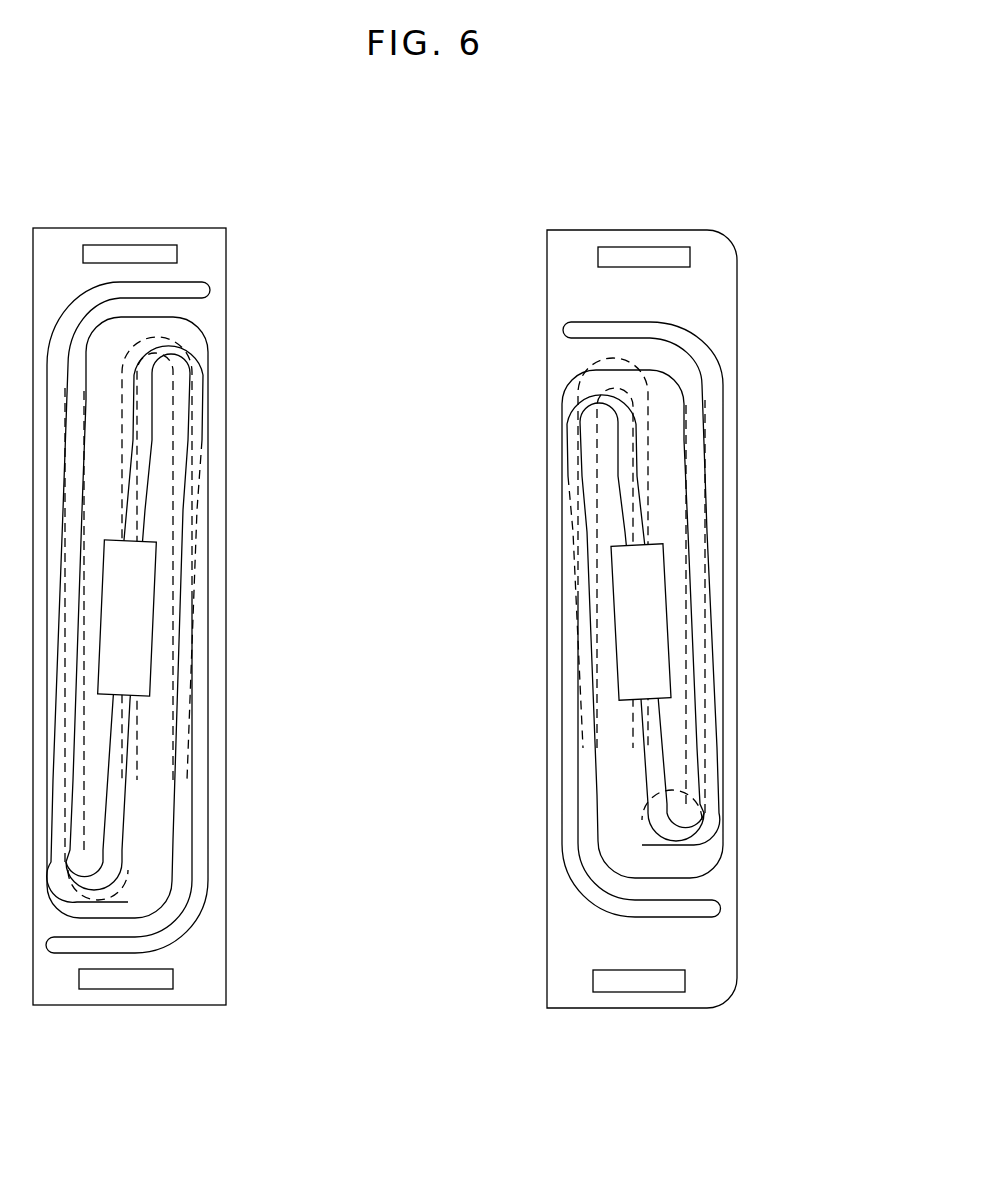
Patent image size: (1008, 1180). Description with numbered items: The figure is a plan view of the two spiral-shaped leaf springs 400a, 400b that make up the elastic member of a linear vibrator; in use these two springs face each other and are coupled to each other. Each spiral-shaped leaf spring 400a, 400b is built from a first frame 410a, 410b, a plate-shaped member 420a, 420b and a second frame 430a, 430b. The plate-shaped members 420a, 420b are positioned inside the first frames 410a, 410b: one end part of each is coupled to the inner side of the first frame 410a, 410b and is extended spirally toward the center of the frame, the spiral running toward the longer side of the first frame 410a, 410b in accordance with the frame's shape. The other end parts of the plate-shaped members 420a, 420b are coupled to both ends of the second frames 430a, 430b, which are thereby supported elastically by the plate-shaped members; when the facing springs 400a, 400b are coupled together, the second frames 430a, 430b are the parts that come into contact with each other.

The spiral-shaped leaf spring 400a is at (259, 201).
The first frame 410a is at (208, 268).
The plate-shaped member 420a is at (197, 466).
The second frame 430a is at (142, 592).
The spiral-shaped leaf spring 400b is at (771, 201).
The first frame 410b is at (722, 268).
The plate-shaped member 420b is at (695, 460).
The second frame 430b is at (652, 606).